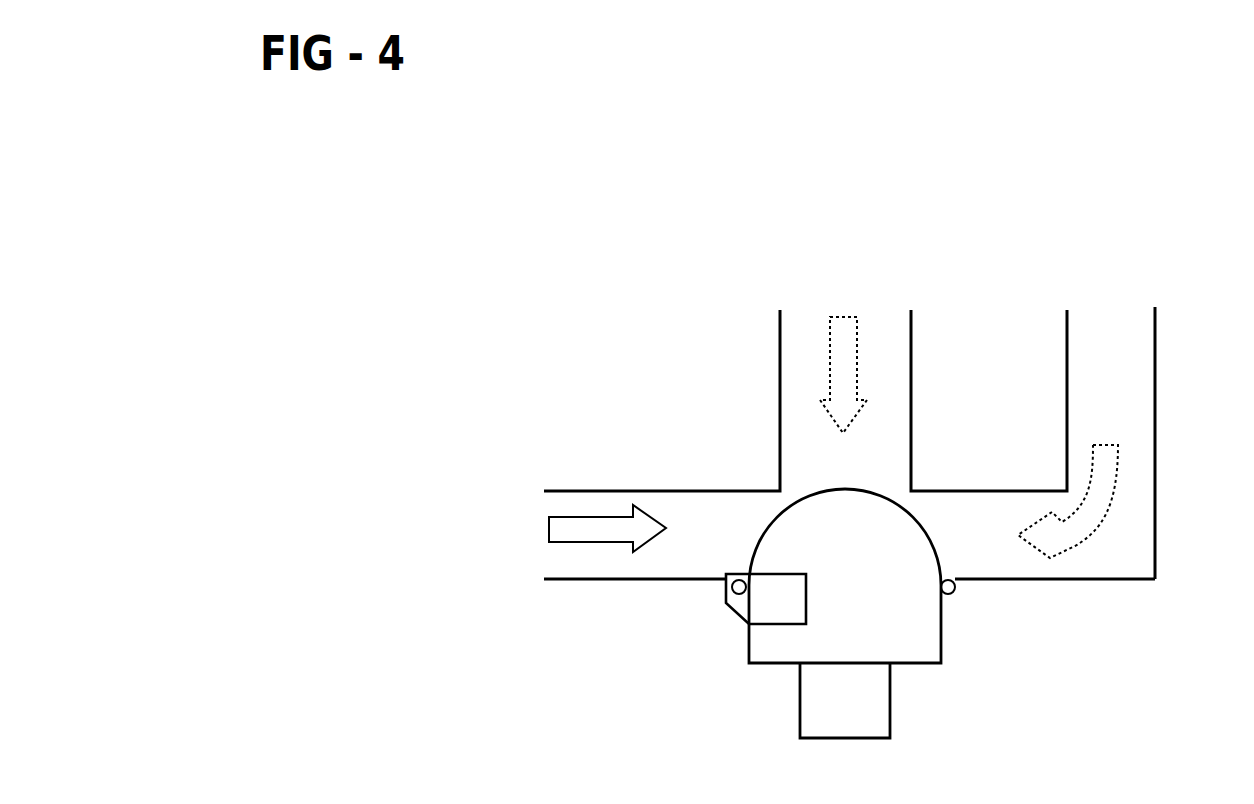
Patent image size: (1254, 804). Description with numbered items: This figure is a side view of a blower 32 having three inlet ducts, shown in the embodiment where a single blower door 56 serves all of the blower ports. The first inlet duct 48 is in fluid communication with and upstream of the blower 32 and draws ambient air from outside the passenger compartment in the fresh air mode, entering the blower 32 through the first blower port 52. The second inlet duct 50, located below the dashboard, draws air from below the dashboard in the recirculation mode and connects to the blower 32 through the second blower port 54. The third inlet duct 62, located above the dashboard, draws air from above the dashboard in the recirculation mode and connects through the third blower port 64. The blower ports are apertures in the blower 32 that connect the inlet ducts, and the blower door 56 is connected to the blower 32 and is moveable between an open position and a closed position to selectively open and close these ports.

The blower 32 is at (765, 672).
The first inlet duct 48 is at (780, 332).
The second inlet duct 50 is at (568, 582).
The first blower port 52 is at (840, 473).
The second blower port 54 is at (737, 555).
The blower door 56 is at (880, 495).
The third inlet duct 62 is at (1155, 342).
The third blower port 64 is at (952, 530).